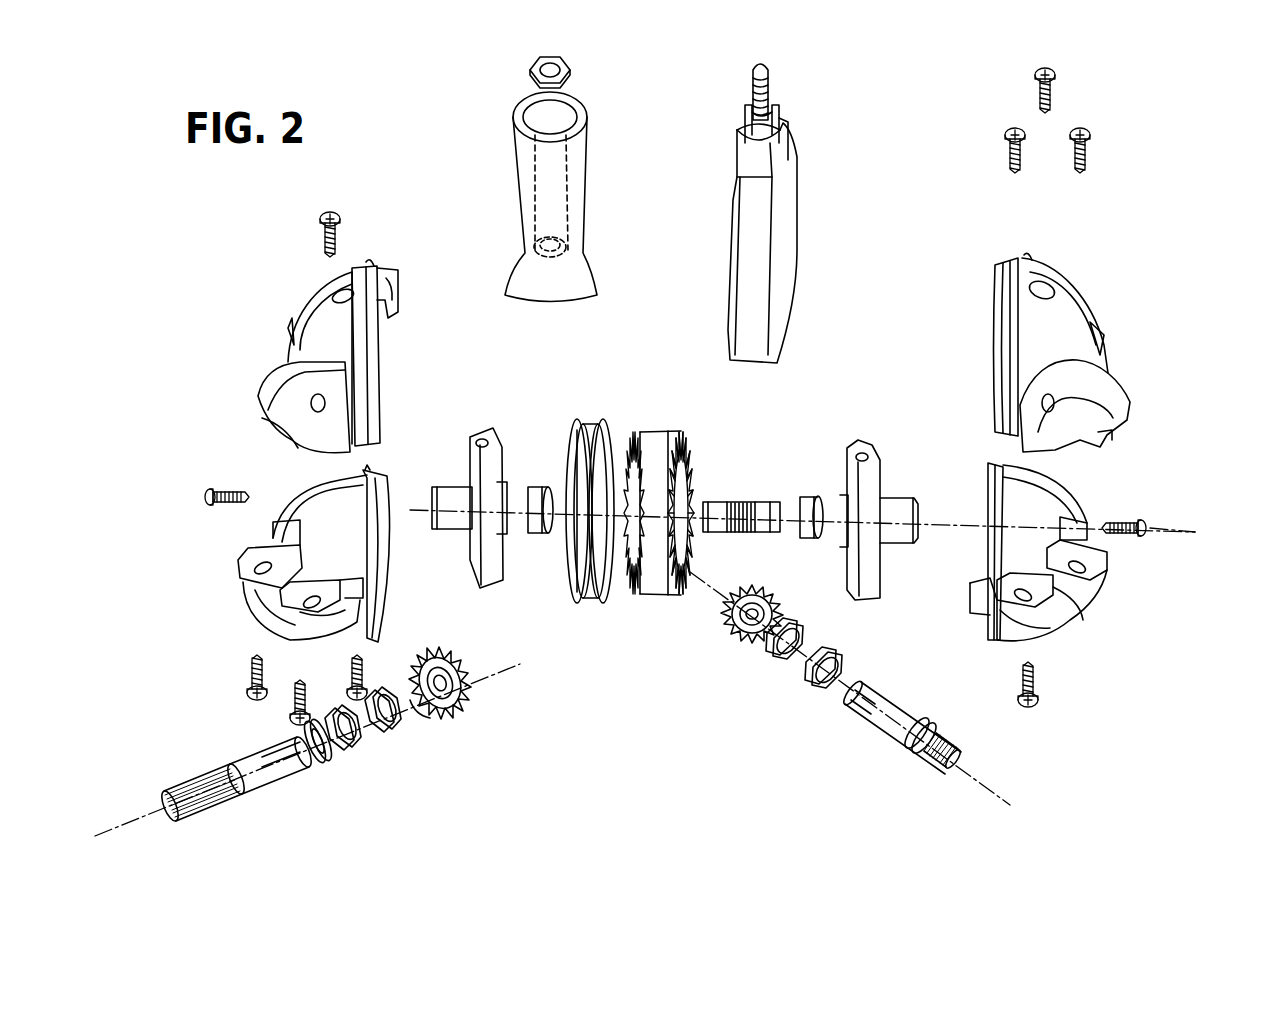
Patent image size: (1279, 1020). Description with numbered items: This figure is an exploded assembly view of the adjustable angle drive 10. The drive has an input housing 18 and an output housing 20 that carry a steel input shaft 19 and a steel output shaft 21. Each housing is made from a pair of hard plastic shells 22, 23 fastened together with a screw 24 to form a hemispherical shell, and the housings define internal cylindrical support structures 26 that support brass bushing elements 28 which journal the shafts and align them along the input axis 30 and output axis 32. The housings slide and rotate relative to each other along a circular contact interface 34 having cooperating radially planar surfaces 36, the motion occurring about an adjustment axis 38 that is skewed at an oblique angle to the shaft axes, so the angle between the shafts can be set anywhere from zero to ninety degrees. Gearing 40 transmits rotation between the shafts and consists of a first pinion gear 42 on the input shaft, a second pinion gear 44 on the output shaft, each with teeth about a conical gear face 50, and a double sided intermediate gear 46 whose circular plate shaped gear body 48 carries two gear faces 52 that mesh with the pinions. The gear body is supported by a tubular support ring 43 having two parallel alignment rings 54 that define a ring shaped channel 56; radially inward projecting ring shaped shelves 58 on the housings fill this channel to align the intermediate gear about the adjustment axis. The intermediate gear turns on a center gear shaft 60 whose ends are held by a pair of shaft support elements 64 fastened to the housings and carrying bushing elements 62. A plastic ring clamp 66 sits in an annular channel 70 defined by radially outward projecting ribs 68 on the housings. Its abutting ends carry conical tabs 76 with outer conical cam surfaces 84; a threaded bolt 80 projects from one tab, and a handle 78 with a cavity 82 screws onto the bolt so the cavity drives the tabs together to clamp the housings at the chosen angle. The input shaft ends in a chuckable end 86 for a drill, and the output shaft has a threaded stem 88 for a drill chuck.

The angle drive 10 is at (1176, 156).
The input housing 18 is at (308, 282).
The input shaft 19 is at (252, 782).
The output housing 20 is at (1098, 298).
The output shaft 21 is at (878, 722).
The hard plastic shell 22 is at (312, 303).
The hard plastic shell 23 is at (335, 512).
The screw 24 is at (250, 670).
The internal cylindrical support structure 26 is at (260, 382).
The bushing element 28 is at (337, 762).
The input axis 30 is at (118, 840).
The output axis 32 is at (1005, 803).
The circular contact interface 34 is at (408, 278).
The radially planar surface 36 is at (398, 282).
The adjustment axis 38 is at (1185, 530).
The gearing 40 is at (682, 628).
The first pinion gear 42 is at (470, 683).
The tubular support ring 43 is at (590, 422).
The second pinion gear 44 is at (772, 604).
The intermediate gear 46 is at (704, 447).
The gear body 48 is at (655, 458).
The conical gear face 50 is at (445, 652).
The gear face 52 is at (630, 440).
The alignment ring 54 is at (575, 418).
The ring shaped channel 56 is at (572, 592).
The ring shaped shelf 58 is at (398, 318).
The center gear shaft 60 is at (750, 500).
The bushing element 62 is at (535, 488).
The shaft support element 64 is at (481, 422).
The ring clamp 66 is at (800, 243).
The rib 68 is at (369, 262).
The annular channel 70 is at (1010, 242).
The conical tab 76 is at (790, 130).
The handle 78 is at (520, 147).
The threaded bolt 80 is at (770, 88).
The cavity 82 is at (562, 205).
The outer conical cam surface 84 is at (793, 112).
The chuckable end 86 is at (198, 778).
The threaded stem 88 is at (952, 733).